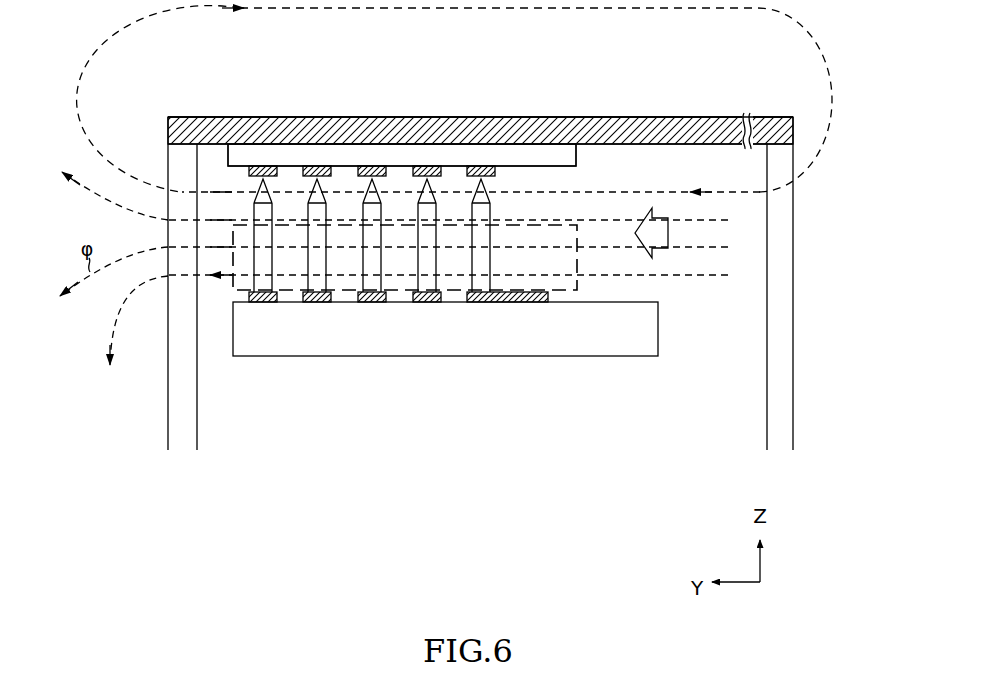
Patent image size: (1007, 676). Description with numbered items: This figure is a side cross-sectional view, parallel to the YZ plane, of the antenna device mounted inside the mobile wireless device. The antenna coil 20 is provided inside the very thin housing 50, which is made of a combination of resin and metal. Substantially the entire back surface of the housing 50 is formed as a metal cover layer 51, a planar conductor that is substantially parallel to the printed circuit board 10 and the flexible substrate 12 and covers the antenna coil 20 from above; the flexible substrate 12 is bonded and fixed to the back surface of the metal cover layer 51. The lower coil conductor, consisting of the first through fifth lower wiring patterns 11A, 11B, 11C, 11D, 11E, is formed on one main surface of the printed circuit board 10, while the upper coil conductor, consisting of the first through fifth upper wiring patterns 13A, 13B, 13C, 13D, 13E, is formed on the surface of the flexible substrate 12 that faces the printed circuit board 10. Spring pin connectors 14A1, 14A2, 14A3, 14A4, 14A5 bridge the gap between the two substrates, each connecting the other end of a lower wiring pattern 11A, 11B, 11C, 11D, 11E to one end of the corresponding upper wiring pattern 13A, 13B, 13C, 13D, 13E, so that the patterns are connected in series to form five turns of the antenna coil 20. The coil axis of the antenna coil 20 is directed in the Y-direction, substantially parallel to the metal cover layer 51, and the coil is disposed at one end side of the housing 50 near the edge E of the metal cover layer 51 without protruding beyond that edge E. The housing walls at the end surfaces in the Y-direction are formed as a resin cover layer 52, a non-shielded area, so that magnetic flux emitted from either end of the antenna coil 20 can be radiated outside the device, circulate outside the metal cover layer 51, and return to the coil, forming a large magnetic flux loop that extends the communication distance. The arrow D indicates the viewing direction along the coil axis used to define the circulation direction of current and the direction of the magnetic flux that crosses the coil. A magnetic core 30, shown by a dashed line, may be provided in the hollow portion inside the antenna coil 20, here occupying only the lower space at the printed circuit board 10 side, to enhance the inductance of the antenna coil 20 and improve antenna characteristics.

The printed circuit board 10 is at (593, 357).
The first lower wiring pattern 11A is at (481, 302).
The second lower wiring pattern 11B is at (427, 302).
The third lower wiring pattern 11C is at (372, 302).
The fourth lower wiring pattern 11D is at (317, 302).
The fifth lower wiring pattern 11E is at (263, 302).
The flexible substrate 12 is at (577, 155).
The first upper wiring pattern 13A is at (480, 167).
The second upper wiring pattern 13B is at (426, 167).
The third upper wiring pattern 13C is at (372, 167).
The fourth upper wiring pattern 13D is at (317, 167).
The fifth upper wiring pattern 13E is at (263, 167).
The spring pin connector 14A1 is at (472, 205).
The spring pin connector 14A2 is at (418, 205).
The spring pin connector 14A3 is at (363, 205).
The spring pin connector 14A4 is at (308, 205).
The spring pin connector 14A5 is at (254, 205).
The antenna coil 20 is at (503, 187).
The magnetic core 30 is at (577, 236).
The housing 50 is at (707, 115).
The metal cover layer 51 is at (651, 116).
The resin cover layer 52 is at (168, 402).
The edge of the metal cover layer E is at (165, 122).
The arrow D is at (651, 233).